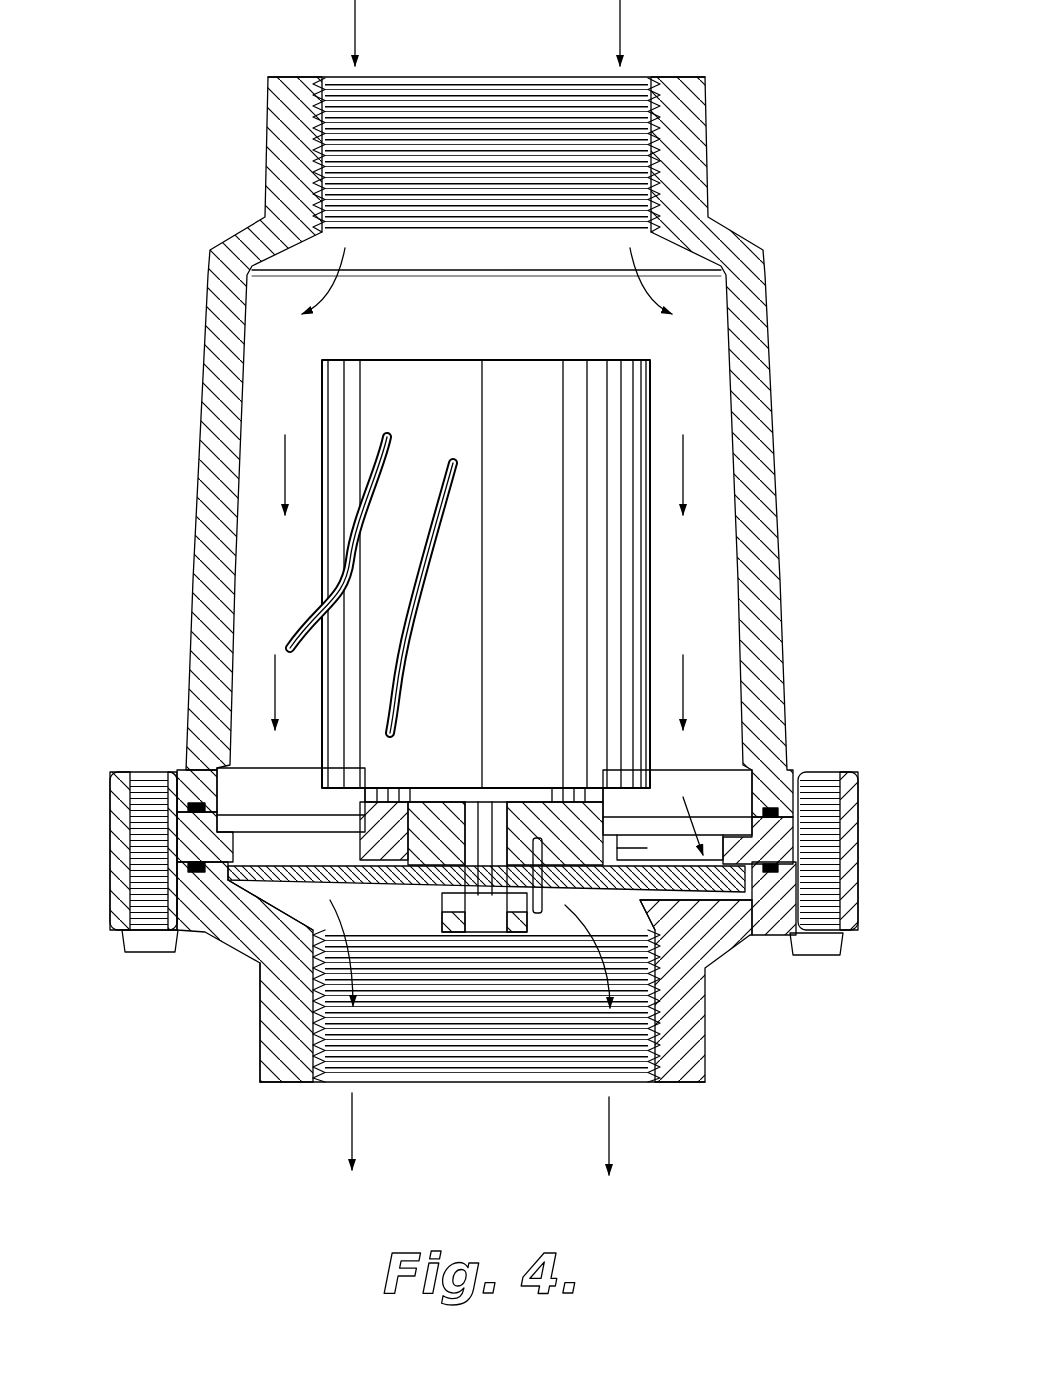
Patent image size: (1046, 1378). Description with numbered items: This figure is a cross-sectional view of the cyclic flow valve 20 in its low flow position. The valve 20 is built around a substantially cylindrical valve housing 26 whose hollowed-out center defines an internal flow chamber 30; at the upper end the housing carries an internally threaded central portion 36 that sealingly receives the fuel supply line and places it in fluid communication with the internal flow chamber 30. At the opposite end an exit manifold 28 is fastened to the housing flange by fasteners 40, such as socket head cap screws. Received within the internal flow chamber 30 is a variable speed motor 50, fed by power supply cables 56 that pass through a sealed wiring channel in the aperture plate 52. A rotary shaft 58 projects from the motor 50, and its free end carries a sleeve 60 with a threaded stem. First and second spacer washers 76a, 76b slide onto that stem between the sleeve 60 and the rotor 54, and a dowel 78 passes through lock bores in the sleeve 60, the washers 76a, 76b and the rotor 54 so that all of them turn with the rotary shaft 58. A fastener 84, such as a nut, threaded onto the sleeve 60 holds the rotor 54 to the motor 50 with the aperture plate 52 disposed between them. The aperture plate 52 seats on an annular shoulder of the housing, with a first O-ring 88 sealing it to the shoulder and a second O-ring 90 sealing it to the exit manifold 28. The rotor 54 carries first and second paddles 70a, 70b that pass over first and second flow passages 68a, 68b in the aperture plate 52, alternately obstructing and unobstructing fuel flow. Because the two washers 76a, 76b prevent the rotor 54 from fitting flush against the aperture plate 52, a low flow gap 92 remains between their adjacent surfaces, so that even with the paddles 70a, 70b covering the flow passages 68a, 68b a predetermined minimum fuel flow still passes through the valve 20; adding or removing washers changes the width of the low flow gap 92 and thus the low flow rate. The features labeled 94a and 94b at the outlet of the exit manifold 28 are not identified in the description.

The valve 20 is at (772, 152).
The valve housing 26 is at (207, 300).
The exit manifold 28 is at (261, 1036).
The internal flow chamber 30 is at (280, 400).
The internally threaded central portion 36 is at (493, 92).
The fasteners 40 is at (138, 953).
The motor 50 is at (655, 436).
The aperture plate 52 is at (184, 798).
The rotor 54 is at (712, 897).
The power supply cables 56 is at (405, 578).
The rotary shaft 58 is at (468, 880).
The sleeve 60 is at (605, 797).
The first flow passage 68a is at (182, 835).
The second flow passage 68b is at (728, 840).
The first paddle 70a is at (257, 905).
The second paddle 70b is at (656, 933).
The first spacer washer 76a is at (367, 815).
The second spacer washer 76b is at (440, 862).
The dowel 78 is at (530, 930).
The fastener 84 is at (540, 916).
The first O-ring 88 is at (193, 802).
The second O-ring 90 is at (197, 873).
The low flow gap 92 is at (262, 997).
The left outlet flow 94a is at (352, 1118).
The right outlet flow 94b is at (609, 1128).